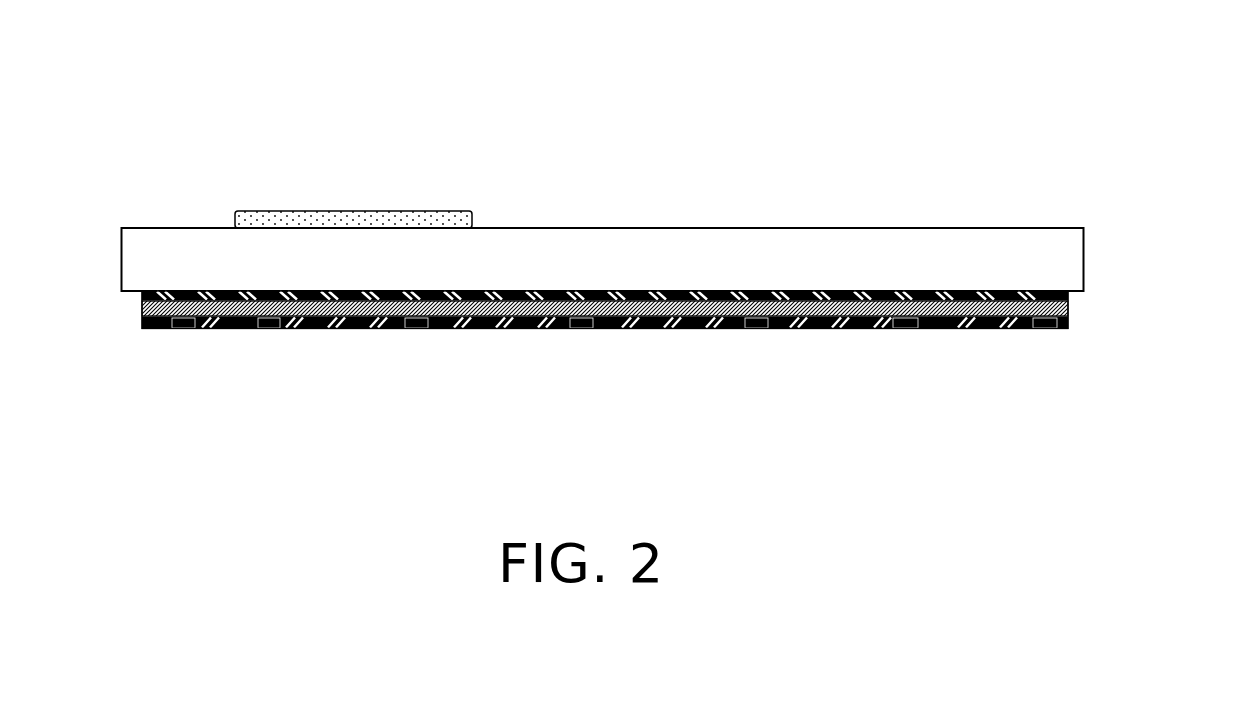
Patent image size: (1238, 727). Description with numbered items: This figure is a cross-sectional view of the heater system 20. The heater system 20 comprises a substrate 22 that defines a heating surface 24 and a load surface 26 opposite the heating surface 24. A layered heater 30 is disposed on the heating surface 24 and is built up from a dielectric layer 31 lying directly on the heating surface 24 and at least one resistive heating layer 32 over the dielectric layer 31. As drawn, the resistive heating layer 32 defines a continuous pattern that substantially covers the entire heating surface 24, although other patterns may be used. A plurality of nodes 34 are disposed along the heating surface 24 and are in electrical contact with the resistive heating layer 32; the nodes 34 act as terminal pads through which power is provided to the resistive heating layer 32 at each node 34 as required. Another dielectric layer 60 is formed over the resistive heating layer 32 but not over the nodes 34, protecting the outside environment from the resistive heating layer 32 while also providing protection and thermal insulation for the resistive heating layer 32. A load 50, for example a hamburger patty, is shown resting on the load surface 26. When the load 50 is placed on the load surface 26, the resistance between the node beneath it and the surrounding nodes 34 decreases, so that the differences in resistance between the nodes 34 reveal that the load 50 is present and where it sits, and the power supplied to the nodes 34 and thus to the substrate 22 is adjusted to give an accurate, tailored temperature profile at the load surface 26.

The heater system 20 is at (993, 128).
The substrate 22 is at (1068, 265).
The heating surface 24 is at (1073, 293).
The load surface 26 is at (181, 227).
The layered heater 30 is at (1073, 320).
The dielectric layer 31 is at (142, 296).
The resistive heating layer 32 is at (153, 307).
The nodes 34 is at (272, 330).
The load 50 is at (393, 218).
The dielectric layer 60 is at (343, 322).